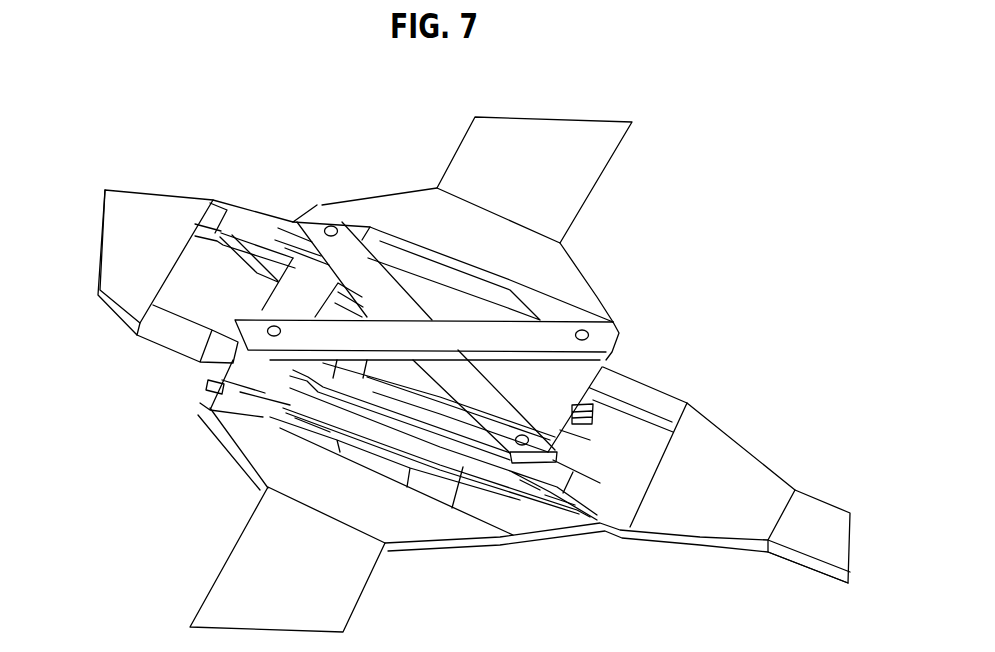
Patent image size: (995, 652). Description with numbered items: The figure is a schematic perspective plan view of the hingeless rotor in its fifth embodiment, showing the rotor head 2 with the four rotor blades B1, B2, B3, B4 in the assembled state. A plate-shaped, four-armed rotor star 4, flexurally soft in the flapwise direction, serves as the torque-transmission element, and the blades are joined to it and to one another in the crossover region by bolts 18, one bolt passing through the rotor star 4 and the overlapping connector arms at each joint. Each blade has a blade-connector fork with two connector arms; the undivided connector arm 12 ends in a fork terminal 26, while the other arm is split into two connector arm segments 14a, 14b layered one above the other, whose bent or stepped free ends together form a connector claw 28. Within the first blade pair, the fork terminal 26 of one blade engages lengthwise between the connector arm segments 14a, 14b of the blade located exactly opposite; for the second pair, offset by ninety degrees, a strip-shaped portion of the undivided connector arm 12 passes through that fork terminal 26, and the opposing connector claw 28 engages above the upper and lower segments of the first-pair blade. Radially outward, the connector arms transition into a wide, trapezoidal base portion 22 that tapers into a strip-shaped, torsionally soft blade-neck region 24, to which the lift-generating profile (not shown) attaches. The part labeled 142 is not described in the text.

The rotor head 2 is at (687, 265).
The rotor star 4 is at (548, 332).
The connector arm 12 is at (162, 340).
The connector arm segment 14a is at (552, 500).
The connector arm segment 14b is at (285, 232).
The bracket 142 is at (252, 253).
The bolt 18 is at (332, 226).
The base portion 22 is at (757, 477).
The blade-neck region 24 is at (825, 572).
The fork terminal 26 is at (452, 508).
The connector claw 28 is at (287, 417).
The rotor blade B1 is at (837, 517).
The rotor blade B2 is at (212, 618).
The rotor blade B3 is at (105, 190).
The rotor blade B4 is at (603, 155).